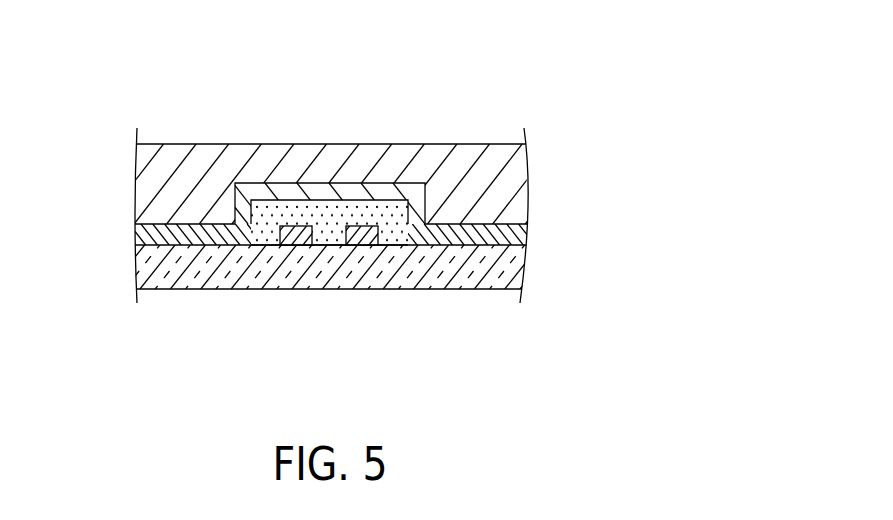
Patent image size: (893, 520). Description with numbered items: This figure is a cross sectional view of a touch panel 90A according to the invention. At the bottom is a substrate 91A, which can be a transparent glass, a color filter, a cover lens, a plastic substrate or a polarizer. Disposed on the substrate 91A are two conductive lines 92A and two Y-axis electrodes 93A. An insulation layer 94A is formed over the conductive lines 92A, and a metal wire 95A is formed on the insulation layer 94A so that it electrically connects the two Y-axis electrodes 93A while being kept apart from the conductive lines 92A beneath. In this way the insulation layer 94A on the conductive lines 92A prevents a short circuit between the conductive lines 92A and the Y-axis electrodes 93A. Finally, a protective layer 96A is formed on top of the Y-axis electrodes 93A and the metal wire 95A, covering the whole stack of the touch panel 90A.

The touch panel 90A is at (302, 44).
The substrate 91A is at (141, 268).
The conductive lines 92A is at (296, 241).
The Y-axis electrodes 93A is at (193, 235).
The insulation layer 94A is at (323, 213).
The metal wire 95A is at (385, 192).
The protective layer 96A is at (147, 180).